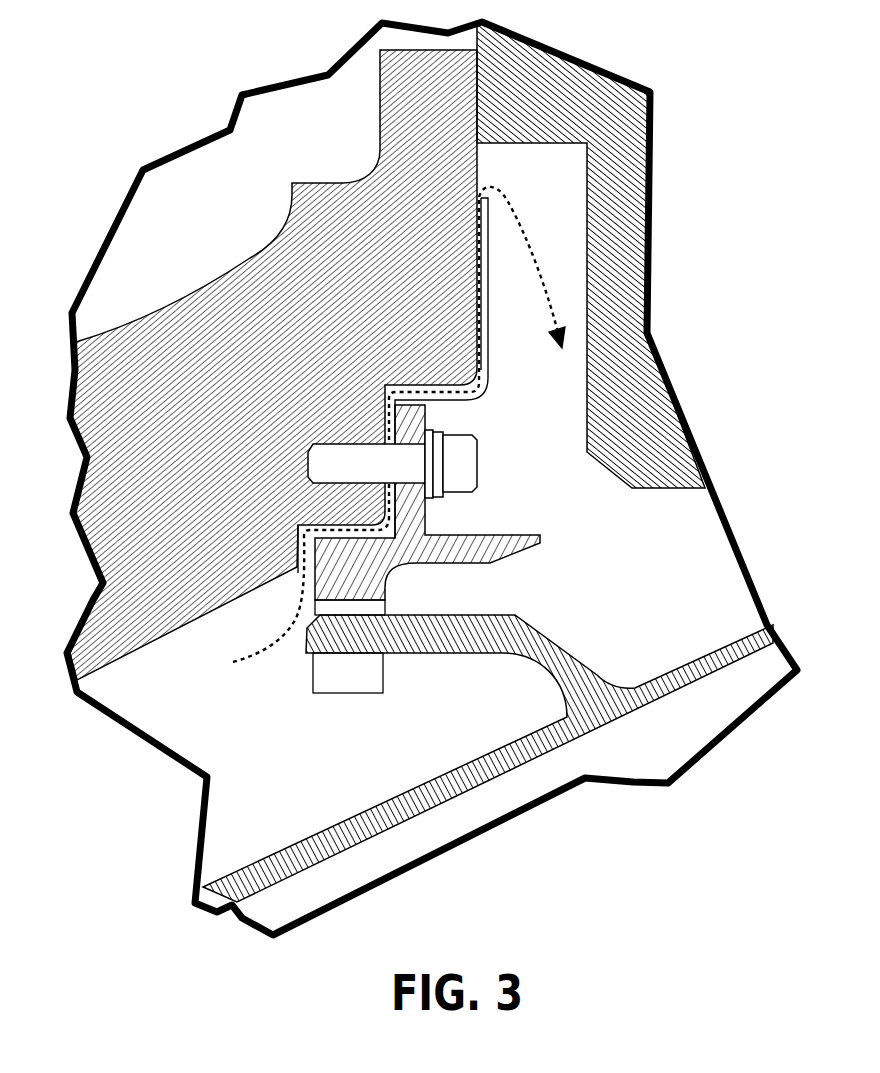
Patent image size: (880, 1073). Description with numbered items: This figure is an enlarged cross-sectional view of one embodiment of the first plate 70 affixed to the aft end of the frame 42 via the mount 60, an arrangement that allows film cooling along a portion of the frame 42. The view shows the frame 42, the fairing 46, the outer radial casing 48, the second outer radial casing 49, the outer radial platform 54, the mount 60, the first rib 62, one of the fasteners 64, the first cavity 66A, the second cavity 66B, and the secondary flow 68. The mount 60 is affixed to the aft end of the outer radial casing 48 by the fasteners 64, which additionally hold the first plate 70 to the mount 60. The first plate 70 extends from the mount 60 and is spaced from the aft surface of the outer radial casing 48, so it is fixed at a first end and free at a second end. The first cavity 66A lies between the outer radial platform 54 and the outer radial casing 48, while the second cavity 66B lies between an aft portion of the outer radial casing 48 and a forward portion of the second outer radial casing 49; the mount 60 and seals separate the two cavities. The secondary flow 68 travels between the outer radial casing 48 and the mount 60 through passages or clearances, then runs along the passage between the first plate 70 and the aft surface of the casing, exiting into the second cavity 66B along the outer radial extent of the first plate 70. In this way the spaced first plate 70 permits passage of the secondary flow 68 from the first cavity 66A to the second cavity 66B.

The frame 42 is at (210, 247).
The fairing 46 is at (633, 724).
The outer radial casing 48 is at (227, 403).
The second outer radial casing 49 is at (564, 112).
The outer radial platform 54 is at (672, 693).
The mount 60 is at (548, 540).
The first rib 62 is at (515, 652).
The fasteners 64 is at (478, 452).
The first cavity 66A is at (208, 742).
The second cavity 66B is at (540, 254).
The secondary air flow 68 is at (267, 640).
The first plate 70 is at (483, 378).